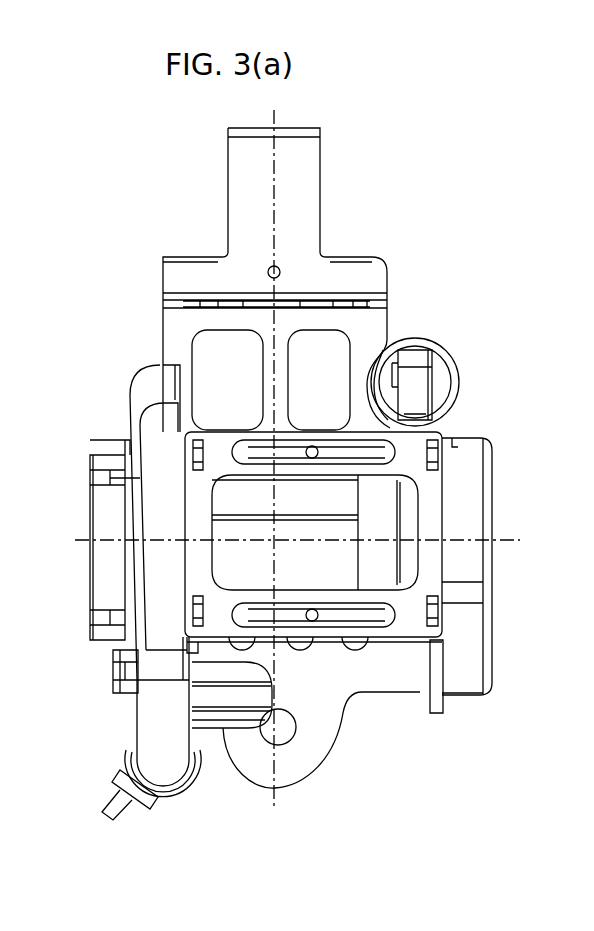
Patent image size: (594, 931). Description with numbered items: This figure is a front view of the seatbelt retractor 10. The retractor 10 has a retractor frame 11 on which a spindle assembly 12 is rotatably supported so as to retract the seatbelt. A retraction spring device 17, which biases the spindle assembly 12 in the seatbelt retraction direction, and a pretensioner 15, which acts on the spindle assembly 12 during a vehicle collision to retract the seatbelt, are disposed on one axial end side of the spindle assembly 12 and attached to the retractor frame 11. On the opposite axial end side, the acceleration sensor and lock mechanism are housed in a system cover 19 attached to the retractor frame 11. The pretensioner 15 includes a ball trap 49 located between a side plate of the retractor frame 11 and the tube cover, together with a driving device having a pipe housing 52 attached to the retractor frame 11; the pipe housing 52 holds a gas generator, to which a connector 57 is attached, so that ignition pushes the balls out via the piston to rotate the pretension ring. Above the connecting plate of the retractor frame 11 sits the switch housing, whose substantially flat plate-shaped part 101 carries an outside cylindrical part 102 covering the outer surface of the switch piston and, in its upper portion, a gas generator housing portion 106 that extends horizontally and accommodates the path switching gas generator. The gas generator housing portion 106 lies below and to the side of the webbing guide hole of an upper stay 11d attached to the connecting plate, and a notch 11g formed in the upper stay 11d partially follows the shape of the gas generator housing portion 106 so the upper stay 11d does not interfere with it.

The seatbelt retractor 10 is at (357, 137).
The retractor frame 11 is at (408, 625).
The upper stay 11d is at (356, 275).
The notch 11g is at (395, 340).
The spindle assembly 12 is at (343, 568).
The pretensioner 15 is at (134, 720).
The retraction spring device 17 is at (92, 438).
The system cover 19 is at (465, 468).
The ball trap 49 is at (208, 697).
The pipe housing 52 is at (163, 663).
The connector 57 is at (155, 805).
The substantially flat plate-shaped part 101 is at (418, 393).
The outside cylindrical part 102 is at (376, 575).
The gas generator housing portion 106 is at (459, 363).